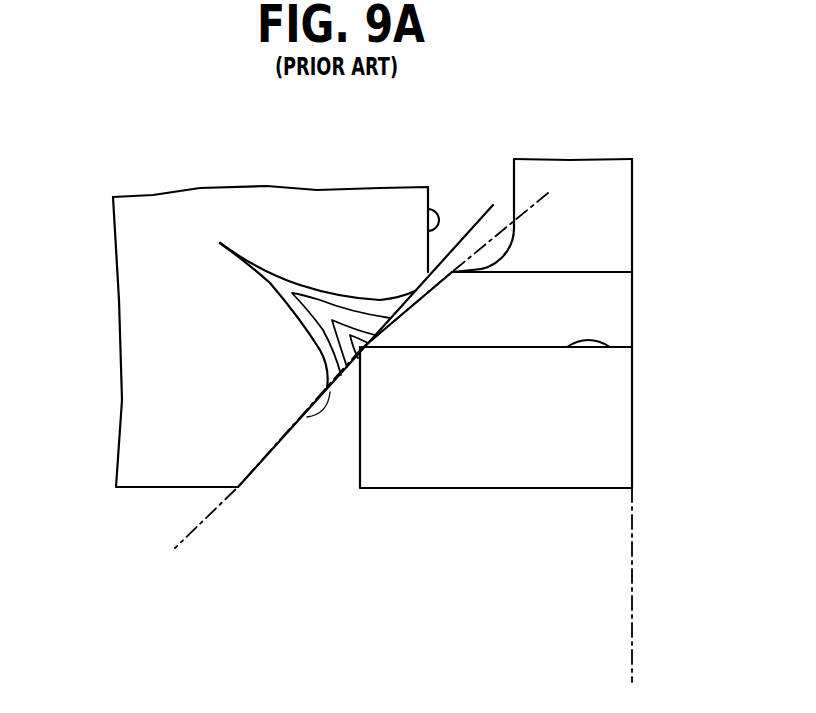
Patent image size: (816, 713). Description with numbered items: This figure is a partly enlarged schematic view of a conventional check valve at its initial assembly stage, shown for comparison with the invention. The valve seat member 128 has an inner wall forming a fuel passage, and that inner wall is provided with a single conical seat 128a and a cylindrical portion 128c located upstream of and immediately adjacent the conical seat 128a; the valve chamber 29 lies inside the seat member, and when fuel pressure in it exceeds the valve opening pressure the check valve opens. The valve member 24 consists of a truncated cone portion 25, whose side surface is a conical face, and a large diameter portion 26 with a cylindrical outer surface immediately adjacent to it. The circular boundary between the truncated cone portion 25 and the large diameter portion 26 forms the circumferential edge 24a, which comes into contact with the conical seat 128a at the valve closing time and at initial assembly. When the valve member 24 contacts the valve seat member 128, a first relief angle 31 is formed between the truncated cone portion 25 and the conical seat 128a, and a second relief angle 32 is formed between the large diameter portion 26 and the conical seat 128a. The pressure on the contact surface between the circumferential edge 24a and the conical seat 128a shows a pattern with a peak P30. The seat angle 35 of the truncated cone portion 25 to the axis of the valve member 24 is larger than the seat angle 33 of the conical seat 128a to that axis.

The valve seat member 128 is at (157, 212).
The conical seat 128a is at (302, 415).
The cylindrical portion 128c is at (430, 208).
The valve chamber 29 is at (445, 192).
The peak of contact surface pressure P30 is at (263, 248).
The valve member 24 is at (632, 256).
The truncated cone portion 25 is at (613, 300).
The circumferential edge 24a is at (610, 347).
The large diameter portion 26 is at (615, 468).
The first relief angle 31 is at (513, 248).
The second relief angle 32 is at (358, 463).
The seat angle of the conical seat 33 is at (627, 663).
The seat angle of the truncated cone portion 35 is at (628, 230).